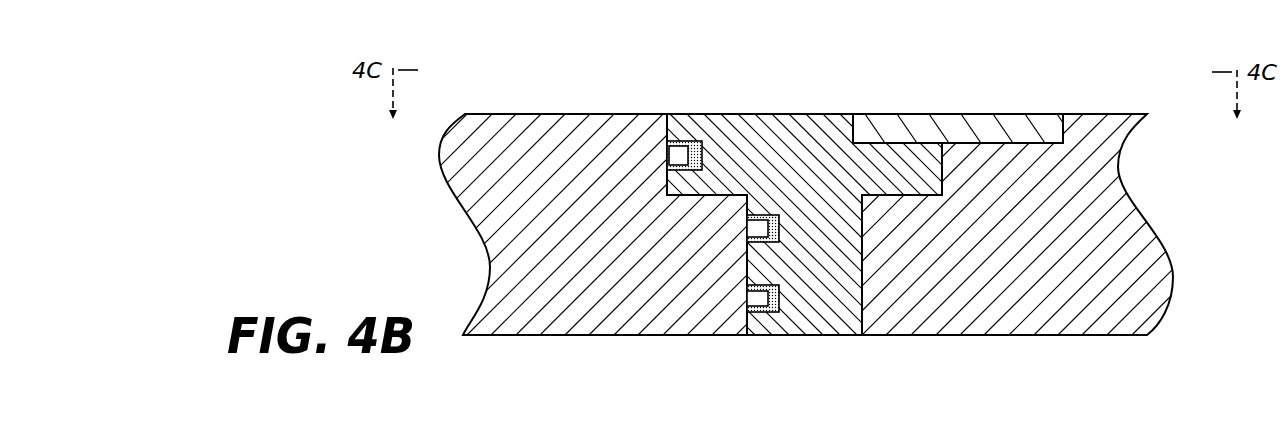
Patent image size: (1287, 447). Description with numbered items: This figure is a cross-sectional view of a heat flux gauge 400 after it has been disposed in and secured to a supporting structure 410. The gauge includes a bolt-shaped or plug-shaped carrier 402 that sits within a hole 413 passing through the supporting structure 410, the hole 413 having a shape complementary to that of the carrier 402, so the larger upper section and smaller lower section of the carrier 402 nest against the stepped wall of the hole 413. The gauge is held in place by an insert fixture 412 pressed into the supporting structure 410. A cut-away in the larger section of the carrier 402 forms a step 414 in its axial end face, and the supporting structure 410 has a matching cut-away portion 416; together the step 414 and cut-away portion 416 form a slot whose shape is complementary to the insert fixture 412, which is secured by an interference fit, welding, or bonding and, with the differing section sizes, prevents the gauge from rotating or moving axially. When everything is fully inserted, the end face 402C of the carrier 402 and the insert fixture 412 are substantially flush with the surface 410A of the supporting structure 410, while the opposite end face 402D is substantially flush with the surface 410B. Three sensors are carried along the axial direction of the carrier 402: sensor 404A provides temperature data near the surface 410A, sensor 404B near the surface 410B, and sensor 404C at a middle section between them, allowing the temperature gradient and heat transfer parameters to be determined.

The heat flux gauge 400 is at (702, 96).
The carrier 402 is at (735, 113).
The end face of carrier 402C is at (797, 113).
The end face of carrier 402D is at (797, 336).
The sensor 404A is at (668, 153).
The sensor 404B is at (746, 304).
The sensor 404C is at (748, 228).
The supporting structure 410 is at (1112, 192).
The surface of supporting structure 410A is at (1087, 112).
The surface of supporting structure 410B is at (1110, 337).
The insert fixture 412 is at (908, 120).
The hole 413 is at (869, 315).
The step 414 is at (846, 118).
The cut-away portion 416 is at (1073, 116).